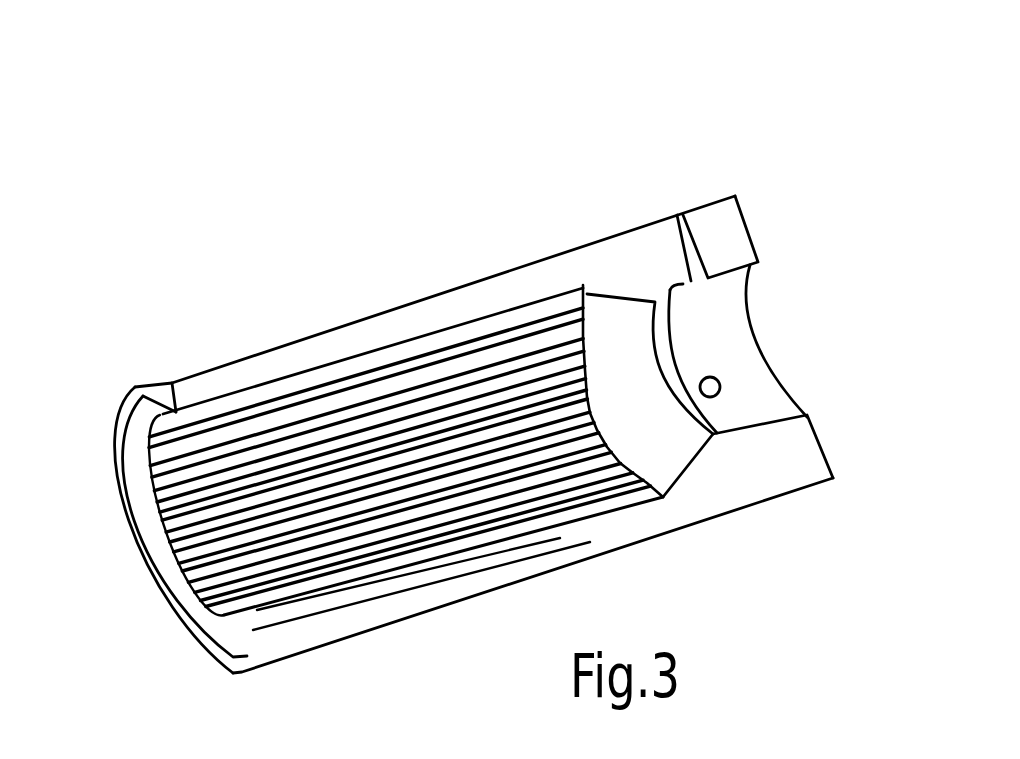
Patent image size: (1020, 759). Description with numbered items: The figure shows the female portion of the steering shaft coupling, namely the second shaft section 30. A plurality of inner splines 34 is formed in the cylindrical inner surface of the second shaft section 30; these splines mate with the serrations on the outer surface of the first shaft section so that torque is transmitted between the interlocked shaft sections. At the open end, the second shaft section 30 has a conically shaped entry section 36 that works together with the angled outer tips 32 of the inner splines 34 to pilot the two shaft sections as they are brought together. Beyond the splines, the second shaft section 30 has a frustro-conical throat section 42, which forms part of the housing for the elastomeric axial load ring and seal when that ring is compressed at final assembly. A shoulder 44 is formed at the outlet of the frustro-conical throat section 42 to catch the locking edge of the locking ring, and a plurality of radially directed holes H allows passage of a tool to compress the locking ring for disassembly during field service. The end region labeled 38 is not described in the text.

The second shaft section 30 is at (316, 222).
The angled outer tips 32 is at (176, 412).
The inner splines 34 is at (405, 466).
The conically shaped entry section 36 is at (144, 537).
The end cap 38 is at (718, 436).
The frustro-conical throat section 42 is at (620, 313).
The shoulder 44 is at (683, 284).
The radially directed holes H is at (677, 215).